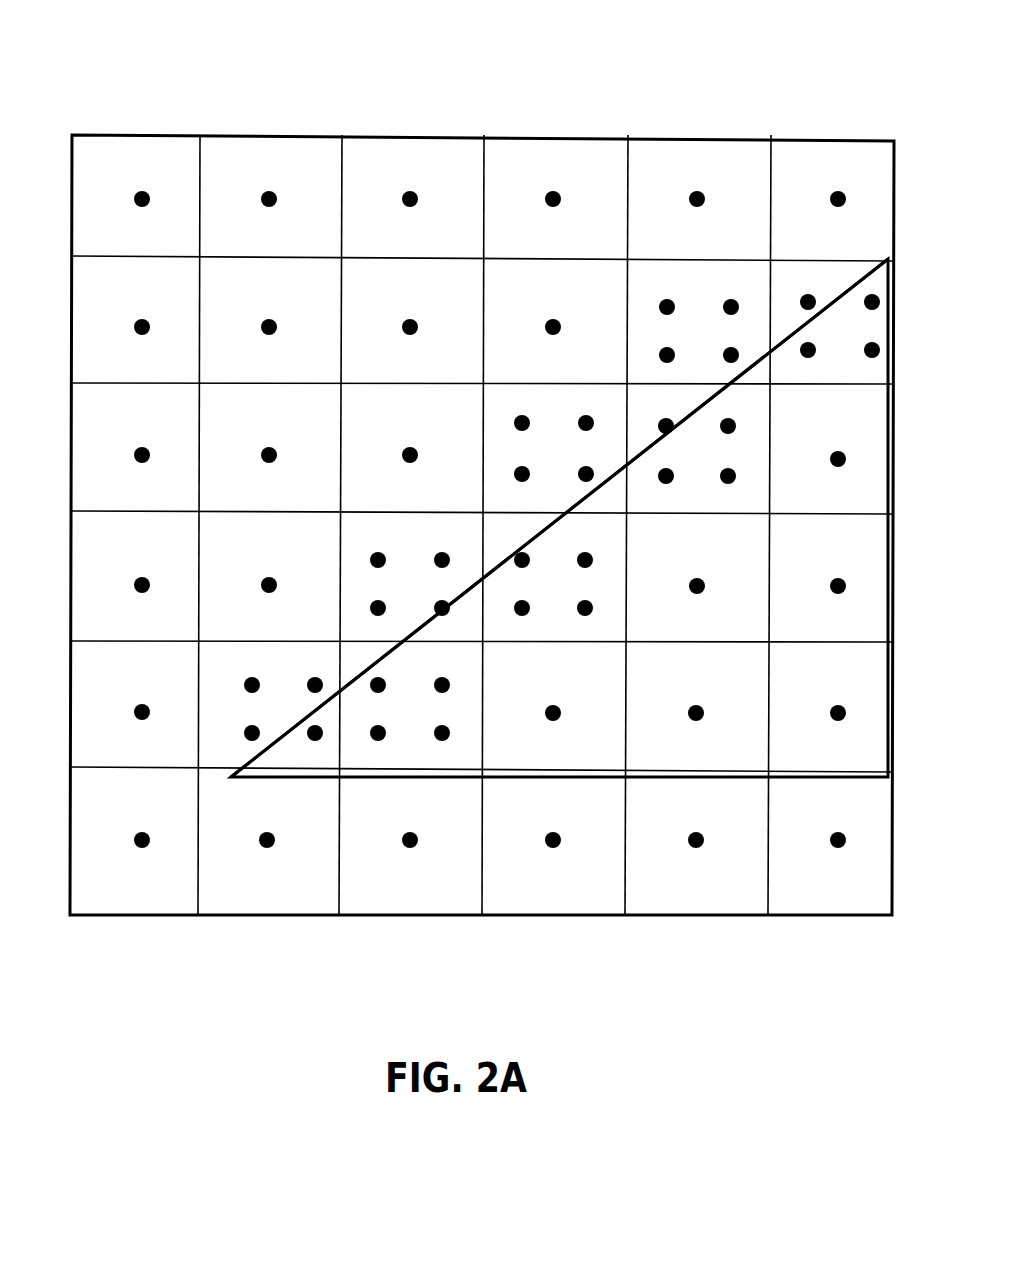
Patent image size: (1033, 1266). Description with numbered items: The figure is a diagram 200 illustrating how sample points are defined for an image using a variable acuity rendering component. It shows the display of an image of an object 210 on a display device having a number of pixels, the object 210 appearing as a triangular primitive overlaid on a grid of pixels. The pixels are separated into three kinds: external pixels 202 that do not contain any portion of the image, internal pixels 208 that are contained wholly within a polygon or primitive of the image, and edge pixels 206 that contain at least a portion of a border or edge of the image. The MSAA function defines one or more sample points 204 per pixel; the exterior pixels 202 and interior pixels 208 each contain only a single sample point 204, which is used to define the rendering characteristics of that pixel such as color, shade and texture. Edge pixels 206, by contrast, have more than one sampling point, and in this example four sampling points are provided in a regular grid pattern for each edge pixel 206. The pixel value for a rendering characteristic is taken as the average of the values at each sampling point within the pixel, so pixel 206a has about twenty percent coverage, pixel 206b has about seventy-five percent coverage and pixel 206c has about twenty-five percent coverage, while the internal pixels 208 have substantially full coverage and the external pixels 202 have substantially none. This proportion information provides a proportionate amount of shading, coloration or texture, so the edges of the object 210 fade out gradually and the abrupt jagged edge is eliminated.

The diagram 200 is at (169, 28).
The external pixels 202 is at (482, 525).
The sample points 204 is at (118, 194).
The edge pixels 206 is at (699, 331).
The pixel 206a is at (554, 437).
The pixel 206b is at (553, 584).
The pixel 206c is at (410, 566).
The internal pixels 208 is at (559, 518).
The object 210 is at (847, 283).